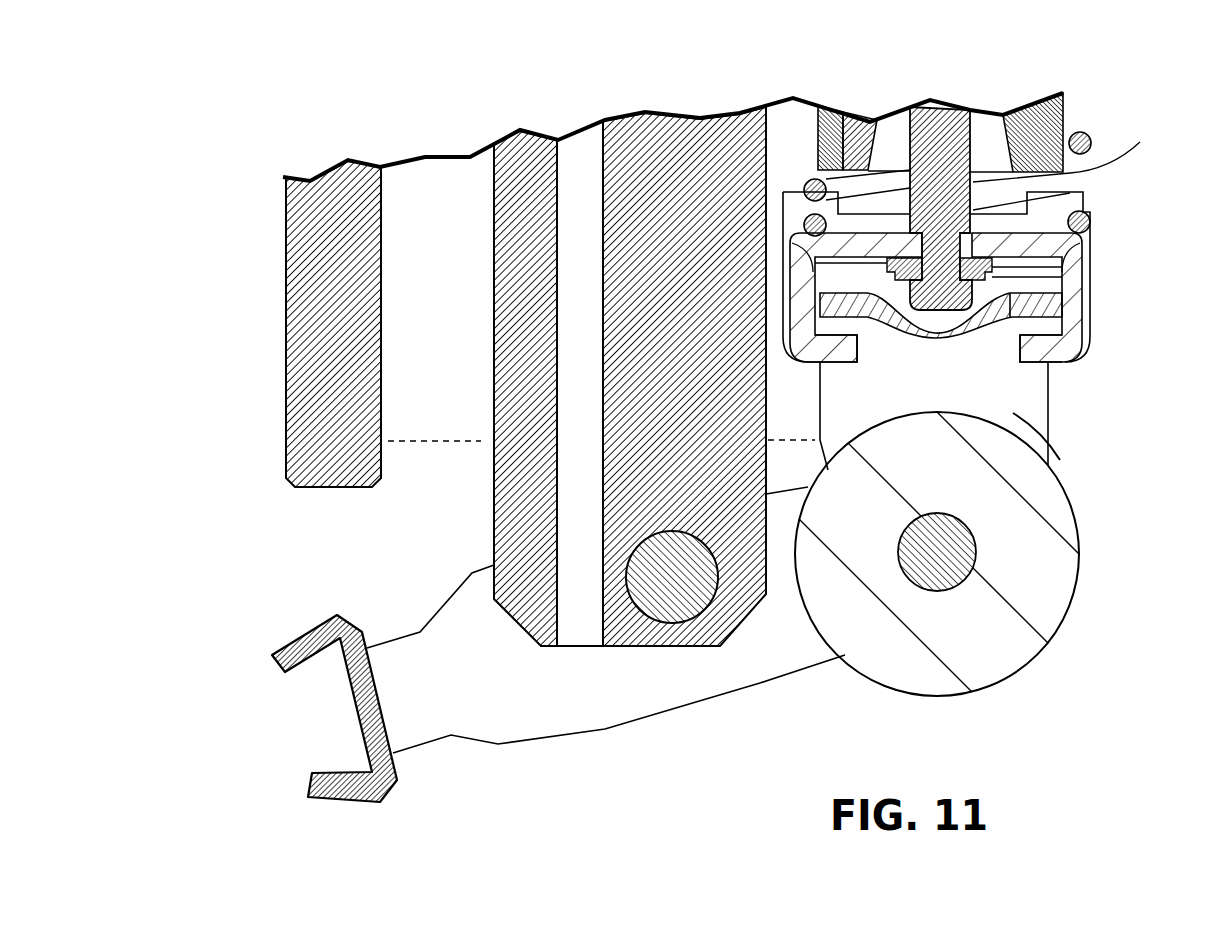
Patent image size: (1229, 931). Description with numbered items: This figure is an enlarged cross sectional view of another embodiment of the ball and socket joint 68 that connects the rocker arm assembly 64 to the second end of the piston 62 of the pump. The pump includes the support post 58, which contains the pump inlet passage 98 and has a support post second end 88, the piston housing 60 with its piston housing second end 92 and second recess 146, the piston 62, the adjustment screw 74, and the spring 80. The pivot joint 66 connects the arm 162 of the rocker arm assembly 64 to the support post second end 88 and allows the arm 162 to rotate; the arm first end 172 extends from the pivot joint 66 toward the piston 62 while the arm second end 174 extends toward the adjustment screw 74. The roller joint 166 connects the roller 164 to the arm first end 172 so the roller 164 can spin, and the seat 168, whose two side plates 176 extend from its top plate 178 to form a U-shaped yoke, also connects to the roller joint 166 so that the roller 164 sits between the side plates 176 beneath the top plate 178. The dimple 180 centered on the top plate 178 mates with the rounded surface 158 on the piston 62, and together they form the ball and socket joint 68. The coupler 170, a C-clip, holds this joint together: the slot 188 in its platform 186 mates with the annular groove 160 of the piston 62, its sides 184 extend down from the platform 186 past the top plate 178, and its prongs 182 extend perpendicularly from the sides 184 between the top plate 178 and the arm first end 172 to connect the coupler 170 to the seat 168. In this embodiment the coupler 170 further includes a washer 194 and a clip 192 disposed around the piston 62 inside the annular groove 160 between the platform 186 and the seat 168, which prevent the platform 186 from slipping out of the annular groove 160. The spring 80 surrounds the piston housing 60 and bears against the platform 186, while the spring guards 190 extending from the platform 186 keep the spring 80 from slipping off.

The support post 58 is at (505, 287).
The piston housing 60 is at (1067, 95).
The piston 62 is at (937, 123).
The rocker arm assembly 64 is at (969, 548).
The pivot joint 66 is at (672, 590).
The ball and socket joint 68 is at (998, 297).
The adjustment screw 74 is at (300, 354).
The spring 80 is at (1089, 136).
The support post second end 88 is at (500, 357).
The piston housing second end 92 is at (810, 130).
The pump inlet passage 98 is at (573, 385).
The second recess 146 is at (886, 142).
The rounded surface 158 is at (925, 308).
The annular groove 160 is at (985, 173).
The arm 162 is at (625, 712).
The roller 164 is at (1043, 555).
The roller joint 166 is at (942, 537).
The seat 168 is at (1055, 397).
The coupler 170 is at (985, 225).
The arm first end 172 is at (797, 483).
The arm second end 174 is at (425, 742).
The side plates 176 is at (1020, 417).
The top plate 178 is at (1043, 310).
The dimple 180 is at (917, 337).
The prongs 182 is at (1057, 352).
The sides 184 is at (767, 278).
The platform 186 is at (1003, 243).
The slot 188 is at (912, 238).
The spring guards 190 is at (795, 200).
The clip 192 is at (1062, 277).
The washer 194 is at (1078, 260).